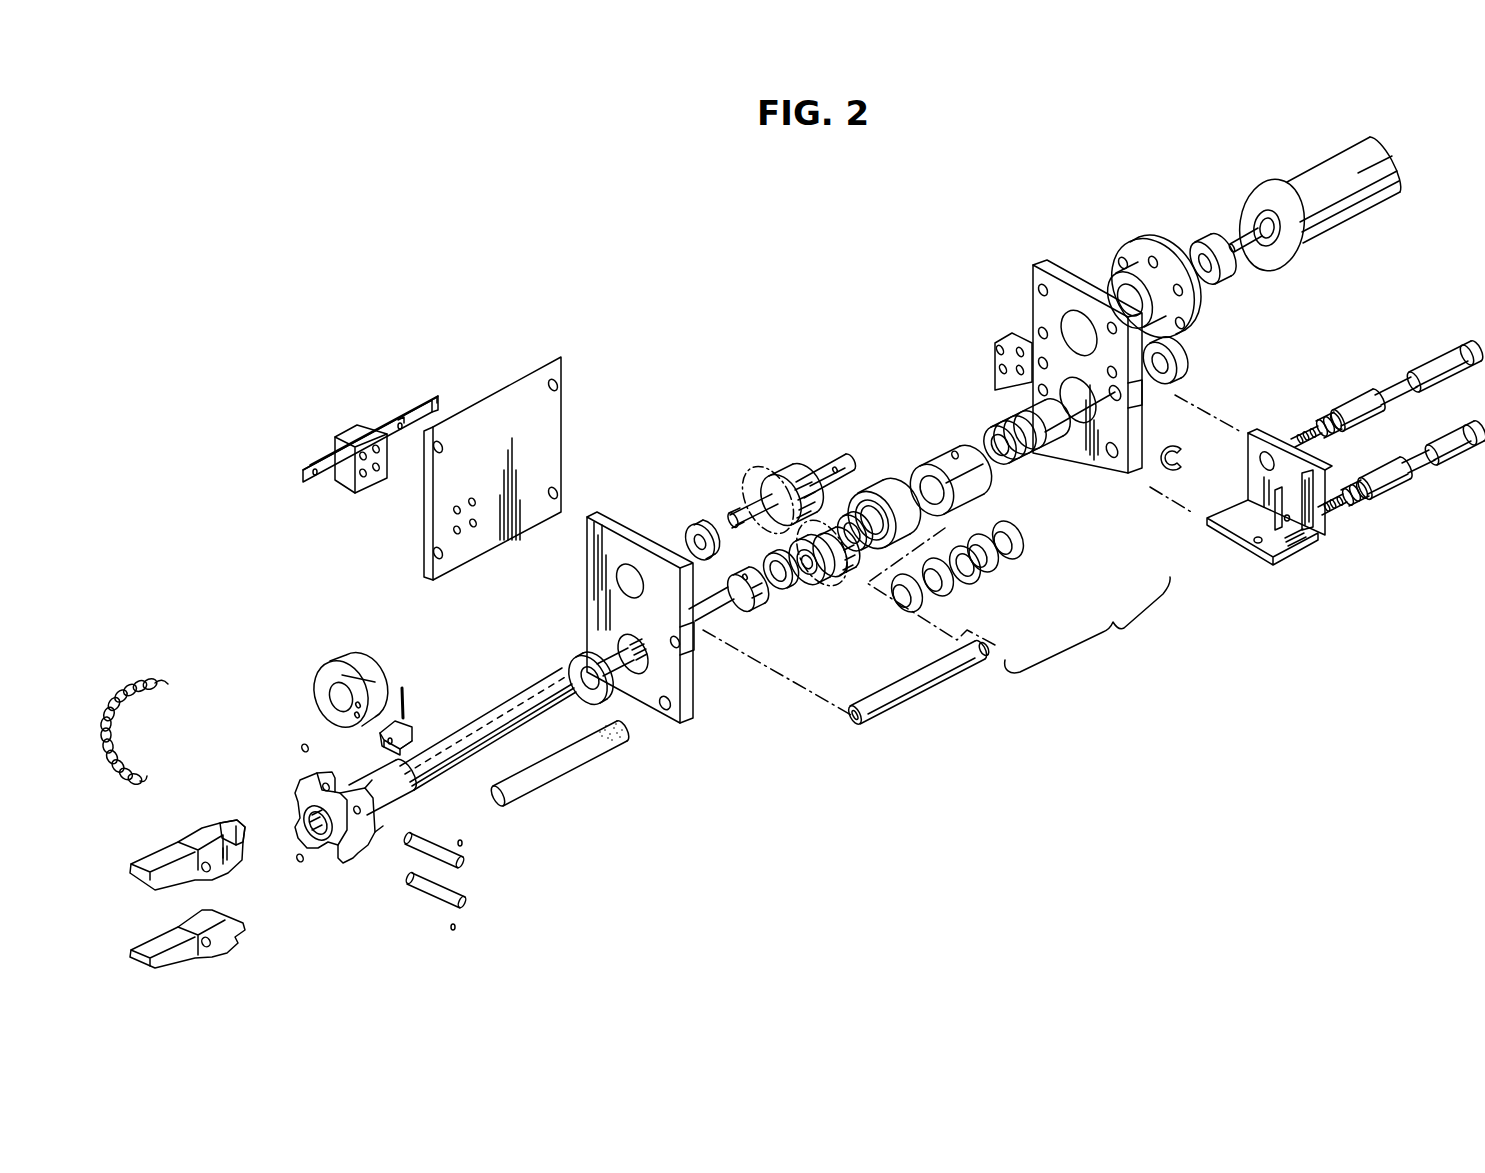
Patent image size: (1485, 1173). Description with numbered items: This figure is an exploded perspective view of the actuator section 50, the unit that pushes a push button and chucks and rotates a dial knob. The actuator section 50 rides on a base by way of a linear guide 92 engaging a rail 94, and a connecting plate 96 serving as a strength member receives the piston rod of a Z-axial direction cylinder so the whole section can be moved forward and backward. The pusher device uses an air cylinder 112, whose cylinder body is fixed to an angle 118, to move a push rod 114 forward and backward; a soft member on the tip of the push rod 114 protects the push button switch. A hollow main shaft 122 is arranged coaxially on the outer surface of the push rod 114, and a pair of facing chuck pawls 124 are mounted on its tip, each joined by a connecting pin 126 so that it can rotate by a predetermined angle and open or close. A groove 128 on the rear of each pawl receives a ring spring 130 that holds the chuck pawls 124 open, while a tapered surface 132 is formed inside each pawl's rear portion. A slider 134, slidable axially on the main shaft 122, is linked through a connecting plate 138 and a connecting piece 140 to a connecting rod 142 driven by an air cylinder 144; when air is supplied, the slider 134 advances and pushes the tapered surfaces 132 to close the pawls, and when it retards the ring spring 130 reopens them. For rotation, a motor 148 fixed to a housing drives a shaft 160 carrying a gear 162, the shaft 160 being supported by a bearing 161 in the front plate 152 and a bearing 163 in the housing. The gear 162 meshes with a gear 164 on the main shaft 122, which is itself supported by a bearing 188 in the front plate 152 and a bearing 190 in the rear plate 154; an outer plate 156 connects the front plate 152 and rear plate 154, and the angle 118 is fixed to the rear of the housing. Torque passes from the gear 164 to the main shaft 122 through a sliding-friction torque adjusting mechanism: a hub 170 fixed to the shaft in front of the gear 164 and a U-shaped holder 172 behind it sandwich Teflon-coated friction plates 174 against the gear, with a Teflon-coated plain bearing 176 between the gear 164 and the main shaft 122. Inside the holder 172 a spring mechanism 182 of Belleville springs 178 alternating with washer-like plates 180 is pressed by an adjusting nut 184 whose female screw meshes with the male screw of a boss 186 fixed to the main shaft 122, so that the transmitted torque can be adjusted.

The actuator section 50 is at (1126, 262).
The linear guide 92 is at (363, 437).
The rail 94 is at (317, 457).
The connecting plate 96 is at (1003, 335).
The air cylinder 112 is at (1432, 368).
The push rod 114 is at (632, 665).
The angle 118 is at (1293, 545).
The main shaft 122 is at (523, 708).
The chuck pawls 124 is at (160, 868).
The connecting pin 126 is at (468, 862).
The groove 128 is at (222, 822).
The ring spring 130 is at (158, 684).
The tapered surface 132 is at (236, 852).
The slider 134 is at (333, 657).
The connecting plate 138 is at (412, 730).
The connecting piece 140 is at (406, 700).
The connecting rod 142 is at (563, 763).
The air cylinder 144 is at (1440, 452).
The motor 148 is at (1320, 172).
The front plate 152 is at (615, 523).
The rear plate 154 is at (1043, 265).
The outer plate 156 is at (515, 375).
The shaft 160 is at (823, 460).
The bearing 161 is at (698, 524).
The gear 162 is at (763, 463).
The bearing 163 is at (1203, 240).
The gear 164 is at (842, 600).
The hub 170 is at (733, 613).
The holder 172 is at (890, 487).
The friction plates 174 is at (775, 593).
The plain bearing 176 is at (813, 585).
The Belleville springs 178 is at (1020, 548).
The washer-like plates 180 is at (972, 582).
The spring mechanism 182 is at (1008, 651).
The adjusting nut 184 is at (947, 447).
The boss 186 is at (1010, 425).
The bearing 188 is at (572, 657).
The bearing 190 is at (1178, 360).